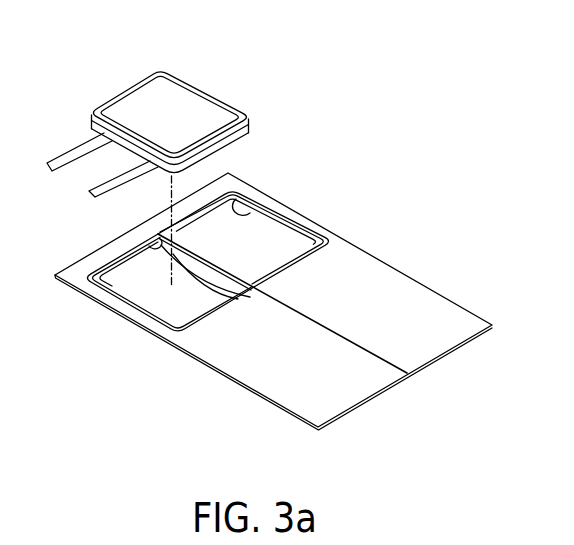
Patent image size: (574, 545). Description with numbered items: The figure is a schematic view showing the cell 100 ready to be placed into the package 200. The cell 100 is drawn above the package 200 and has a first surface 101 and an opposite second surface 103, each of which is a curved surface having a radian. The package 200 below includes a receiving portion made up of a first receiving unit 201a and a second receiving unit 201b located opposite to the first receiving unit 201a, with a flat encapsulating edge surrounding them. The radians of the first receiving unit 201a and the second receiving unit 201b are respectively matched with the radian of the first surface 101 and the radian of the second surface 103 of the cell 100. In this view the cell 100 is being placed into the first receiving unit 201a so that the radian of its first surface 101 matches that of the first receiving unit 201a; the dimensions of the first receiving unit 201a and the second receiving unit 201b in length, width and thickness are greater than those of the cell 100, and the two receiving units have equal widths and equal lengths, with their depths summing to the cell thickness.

The cell 100 is at (166, 50).
The first surface 101 is at (117, 147).
The second surface 103 is at (198, 114).
The package 200 is at (405, 257).
The first receiving unit 201a is at (138, 302).
The second receiving unit 201b is at (258, 226).